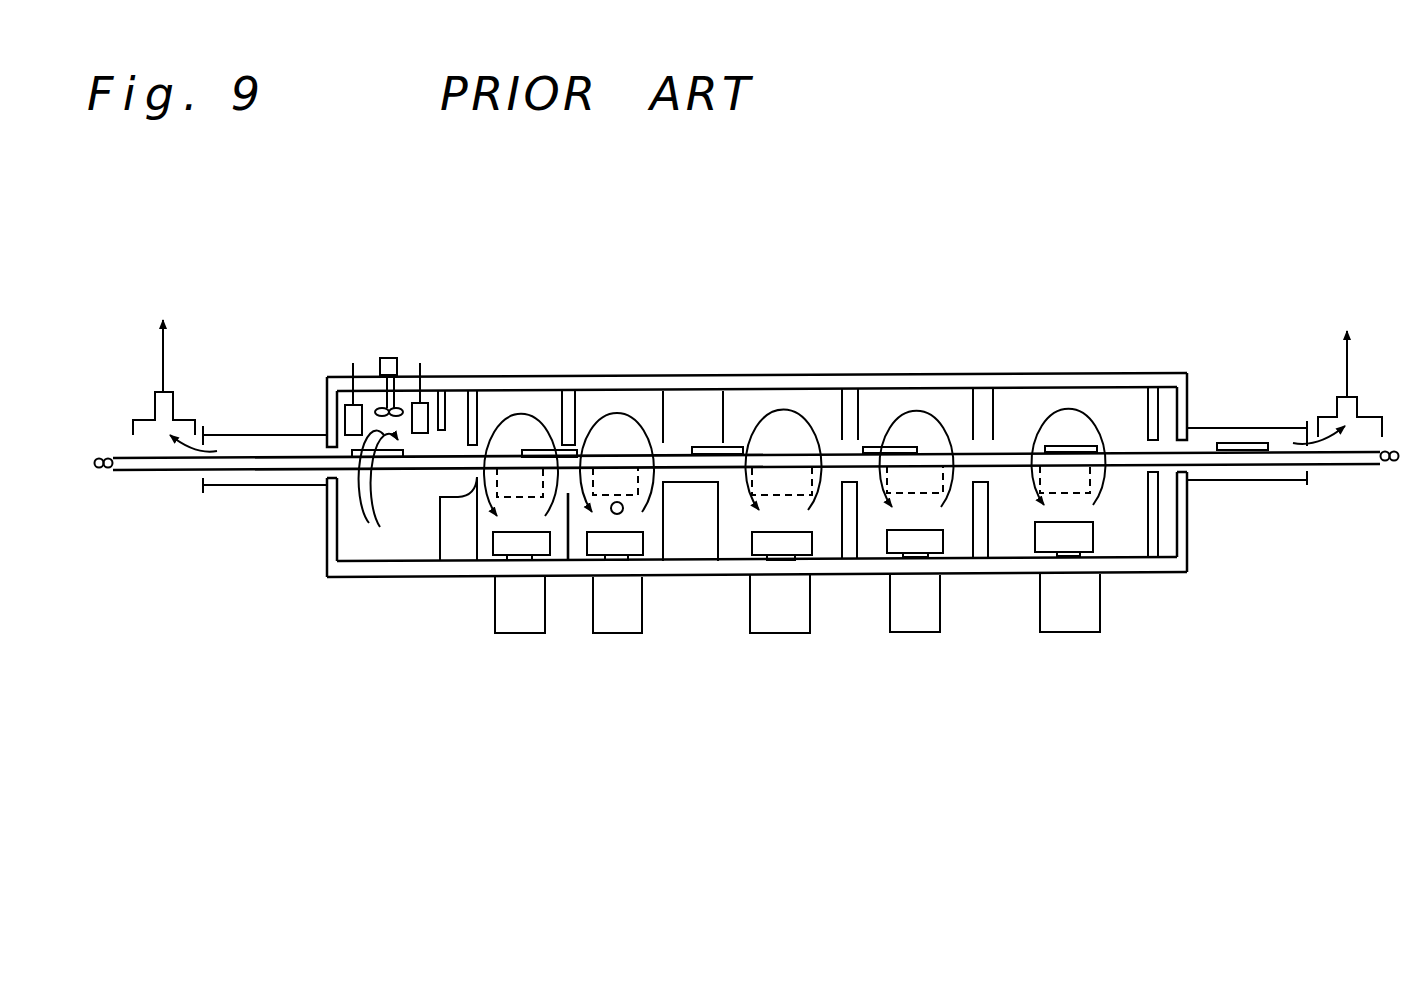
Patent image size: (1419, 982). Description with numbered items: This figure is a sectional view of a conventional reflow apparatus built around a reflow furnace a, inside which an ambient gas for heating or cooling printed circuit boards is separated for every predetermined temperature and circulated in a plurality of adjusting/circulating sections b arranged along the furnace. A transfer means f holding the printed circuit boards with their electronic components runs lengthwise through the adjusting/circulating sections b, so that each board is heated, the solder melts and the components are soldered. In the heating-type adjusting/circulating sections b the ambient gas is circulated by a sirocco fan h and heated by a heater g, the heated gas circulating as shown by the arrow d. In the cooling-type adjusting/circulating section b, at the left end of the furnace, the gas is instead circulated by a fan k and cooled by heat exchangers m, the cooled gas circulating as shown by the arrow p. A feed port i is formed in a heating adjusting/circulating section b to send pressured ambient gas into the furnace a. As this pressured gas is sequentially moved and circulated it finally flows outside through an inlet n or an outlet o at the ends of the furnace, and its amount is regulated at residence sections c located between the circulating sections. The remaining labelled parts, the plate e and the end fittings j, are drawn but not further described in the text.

The reflow furnace a is at (815, 372).
The adjusting/circulating section b is at (404, 404).
The residence section c is at (456, 405).
The arrow d is at (1093, 401).
The support plate e is at (1249, 442).
The transfer means f is at (1350, 465).
The heater g is at (523, 497).
The sirocco fan h is at (497, 537).
The feed port i is at (617, 515).
The exhaust port j is at (175, 406).
The fan k is at (378, 400).
The heat exchanger m is at (348, 405).
The inlet n is at (1307, 472).
The outlet o is at (198, 480).
The arrow p is at (372, 524).